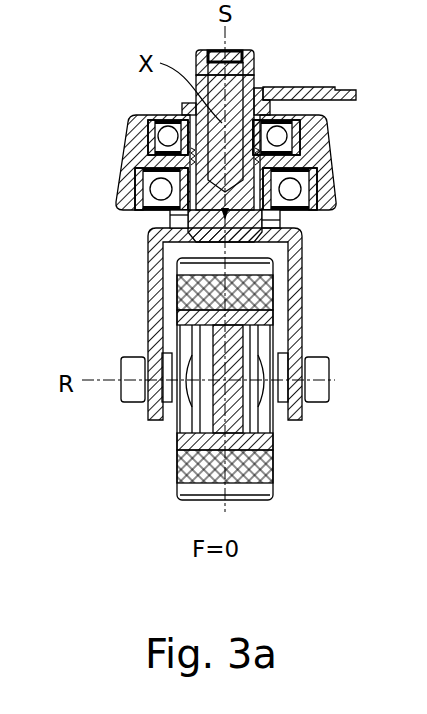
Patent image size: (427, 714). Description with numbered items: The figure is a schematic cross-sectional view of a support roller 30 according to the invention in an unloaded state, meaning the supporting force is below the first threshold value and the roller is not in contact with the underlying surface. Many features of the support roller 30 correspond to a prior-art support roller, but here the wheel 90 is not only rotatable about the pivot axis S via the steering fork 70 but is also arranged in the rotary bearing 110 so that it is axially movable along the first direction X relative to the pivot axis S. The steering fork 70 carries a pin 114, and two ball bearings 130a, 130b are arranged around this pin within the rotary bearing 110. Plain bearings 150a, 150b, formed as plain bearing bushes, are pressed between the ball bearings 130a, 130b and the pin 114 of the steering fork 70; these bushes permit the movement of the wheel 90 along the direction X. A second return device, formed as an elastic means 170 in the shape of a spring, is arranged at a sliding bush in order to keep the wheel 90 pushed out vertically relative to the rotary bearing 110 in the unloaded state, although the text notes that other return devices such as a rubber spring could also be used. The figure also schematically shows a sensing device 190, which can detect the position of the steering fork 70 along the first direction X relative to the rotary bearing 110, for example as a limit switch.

The support roller 30 is at (100, 272).
The steering fork 70 is at (143, 332).
The wheel 90 is at (175, 481).
The rotary bearing 110 is at (110, 193).
The pin 114 is at (196, 215).
The ball bearing 130a is at (139, 126).
The ball bearing 130b is at (132, 178).
The plain bearing 150a is at (302, 118).
The plain bearing 150b is at (302, 173).
The elastic means 170 is at (268, 162).
The sensing device 190 is at (283, 84).